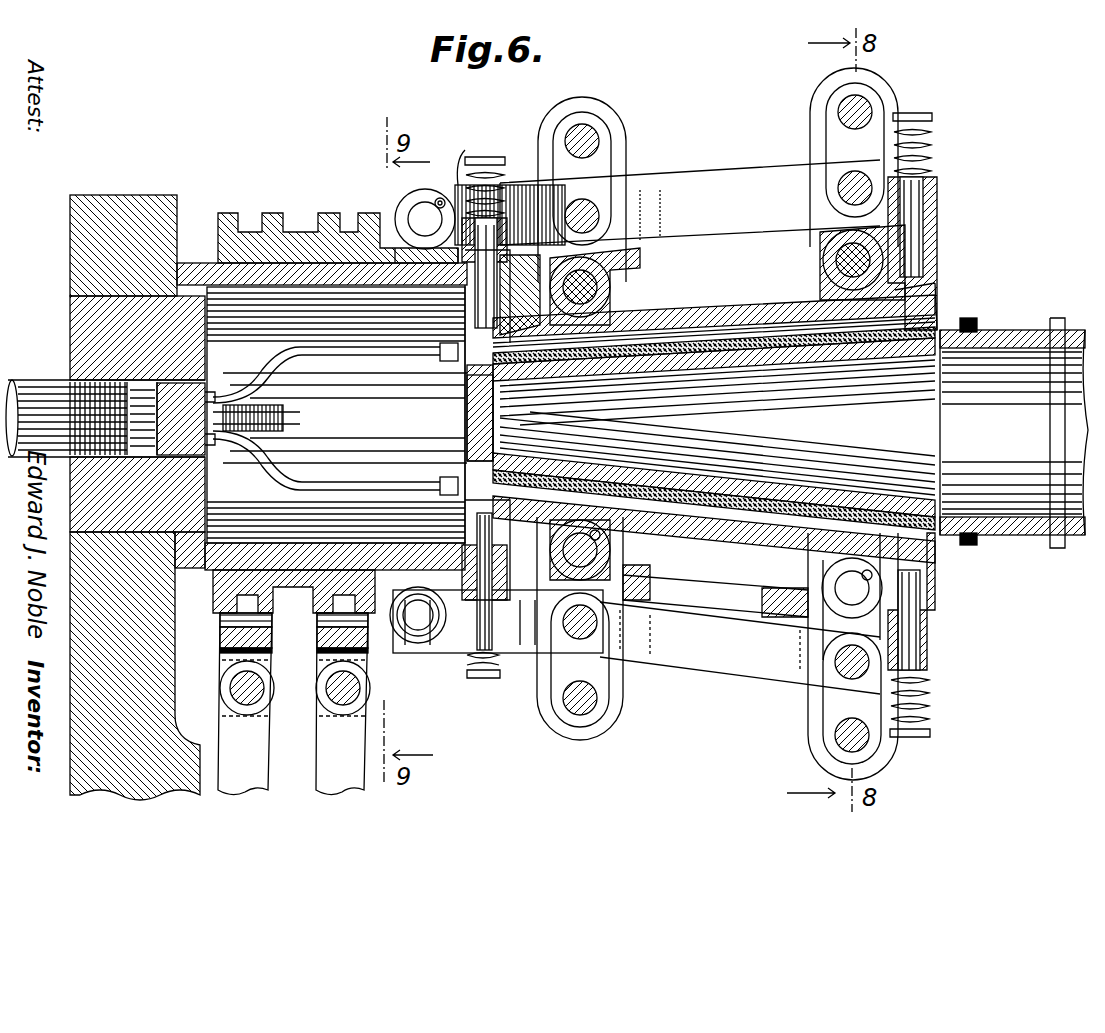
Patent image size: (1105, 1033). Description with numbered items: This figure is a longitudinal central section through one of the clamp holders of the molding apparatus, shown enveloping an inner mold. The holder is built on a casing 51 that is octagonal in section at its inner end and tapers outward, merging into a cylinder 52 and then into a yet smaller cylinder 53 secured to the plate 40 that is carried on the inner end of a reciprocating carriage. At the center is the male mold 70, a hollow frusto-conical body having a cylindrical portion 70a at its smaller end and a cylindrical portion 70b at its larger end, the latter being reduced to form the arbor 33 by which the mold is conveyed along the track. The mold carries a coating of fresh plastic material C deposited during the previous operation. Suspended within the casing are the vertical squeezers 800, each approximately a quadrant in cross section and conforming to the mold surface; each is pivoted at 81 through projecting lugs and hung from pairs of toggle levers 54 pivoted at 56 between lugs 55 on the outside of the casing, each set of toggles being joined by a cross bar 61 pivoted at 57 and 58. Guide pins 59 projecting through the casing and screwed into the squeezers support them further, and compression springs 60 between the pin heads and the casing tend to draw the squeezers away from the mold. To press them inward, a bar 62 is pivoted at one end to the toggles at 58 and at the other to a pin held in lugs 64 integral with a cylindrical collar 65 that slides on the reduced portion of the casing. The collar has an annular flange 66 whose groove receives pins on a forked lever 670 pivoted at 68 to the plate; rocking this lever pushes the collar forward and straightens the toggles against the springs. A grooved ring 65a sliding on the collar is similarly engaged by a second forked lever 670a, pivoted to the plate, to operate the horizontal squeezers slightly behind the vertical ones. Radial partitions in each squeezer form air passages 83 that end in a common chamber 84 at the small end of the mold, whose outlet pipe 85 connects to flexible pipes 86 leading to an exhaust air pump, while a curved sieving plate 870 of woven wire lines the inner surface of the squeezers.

The arbor 33 is at (1078, 360).
The plate 40 is at (72, 250).
The casing 51 is at (740, 318).
The cylinder 52 is at (318, 265).
The smaller cylinder 53 is at (72, 335).
The toggle levers 54 is at (598, 166).
The lugs 55 is at (612, 112).
The pivot 56 is at (598, 138).
The pivot 57 is at (845, 182).
The pivot 58 is at (592, 210).
The guide pins 59 is at (472, 160).
The compression springs 60 is at (465, 170).
The cross bar 61 is at (668, 672).
The bar 62 is at (512, 183).
The lugs 64 is at (412, 222).
The cylindrical collar 65 is at (292, 255).
The grooved ring 65a is at (390, 640).
The annular flange 66 is at (228, 213).
The pivot 68 is at (230, 700).
The forked lever 670 is at (246, 704).
The forked lever 670a is at (343, 704).
The male mold 70 is at (714, 427).
The cylindrical portion 70a is at (490, 410).
The cylindrical portion 70b is at (1008, 355).
The pivots 81 is at (598, 298).
The air passages 83 is at (714, 422).
The common chamber 84 is at (445, 380).
The outlet pipe 85 is at (470, 480).
The flexible pipes 86 is at (62, 400).
The vertical squeezers 800 is at (688, 322).
The sieving plate 870 is at (935, 310).
The plastic material C is at (695, 490).